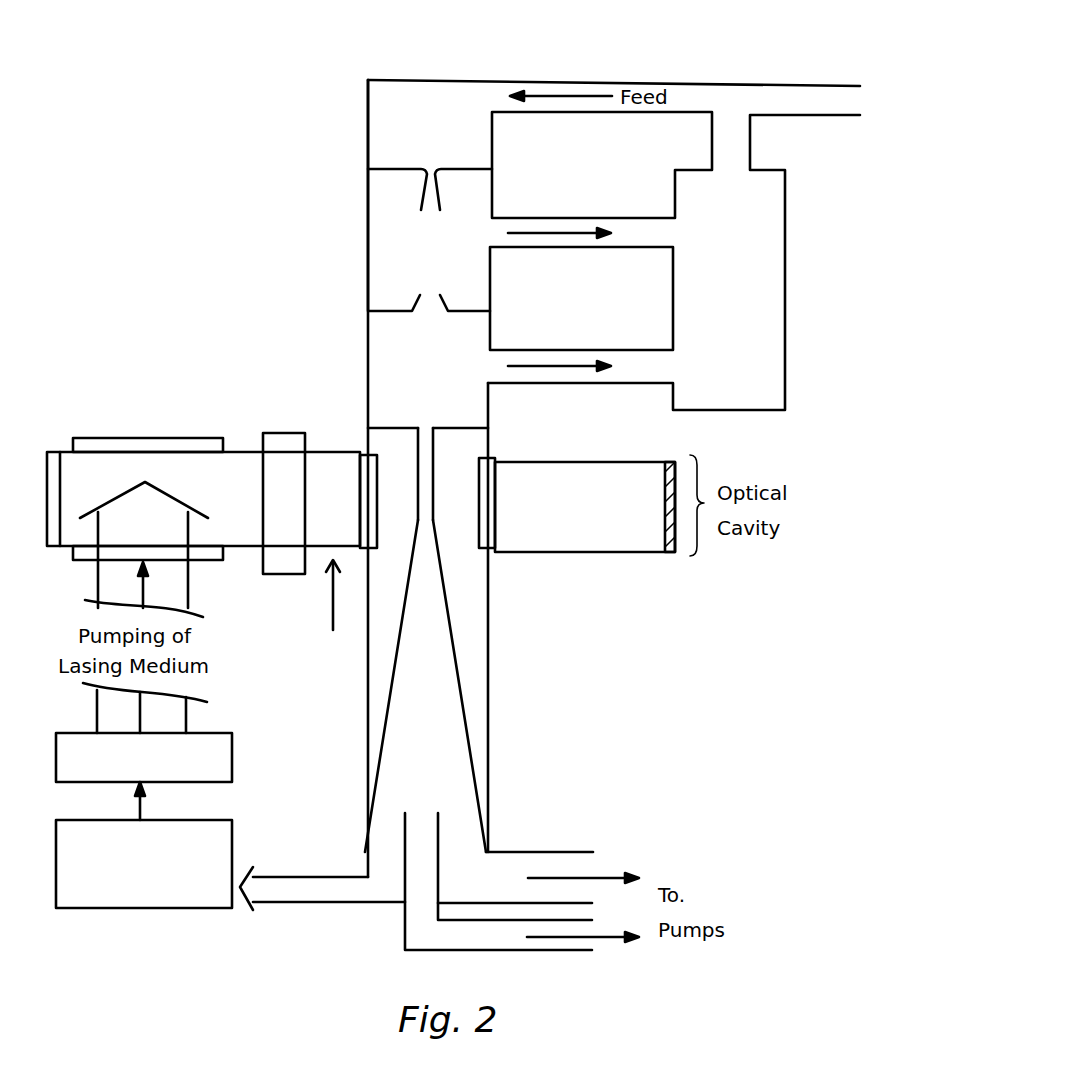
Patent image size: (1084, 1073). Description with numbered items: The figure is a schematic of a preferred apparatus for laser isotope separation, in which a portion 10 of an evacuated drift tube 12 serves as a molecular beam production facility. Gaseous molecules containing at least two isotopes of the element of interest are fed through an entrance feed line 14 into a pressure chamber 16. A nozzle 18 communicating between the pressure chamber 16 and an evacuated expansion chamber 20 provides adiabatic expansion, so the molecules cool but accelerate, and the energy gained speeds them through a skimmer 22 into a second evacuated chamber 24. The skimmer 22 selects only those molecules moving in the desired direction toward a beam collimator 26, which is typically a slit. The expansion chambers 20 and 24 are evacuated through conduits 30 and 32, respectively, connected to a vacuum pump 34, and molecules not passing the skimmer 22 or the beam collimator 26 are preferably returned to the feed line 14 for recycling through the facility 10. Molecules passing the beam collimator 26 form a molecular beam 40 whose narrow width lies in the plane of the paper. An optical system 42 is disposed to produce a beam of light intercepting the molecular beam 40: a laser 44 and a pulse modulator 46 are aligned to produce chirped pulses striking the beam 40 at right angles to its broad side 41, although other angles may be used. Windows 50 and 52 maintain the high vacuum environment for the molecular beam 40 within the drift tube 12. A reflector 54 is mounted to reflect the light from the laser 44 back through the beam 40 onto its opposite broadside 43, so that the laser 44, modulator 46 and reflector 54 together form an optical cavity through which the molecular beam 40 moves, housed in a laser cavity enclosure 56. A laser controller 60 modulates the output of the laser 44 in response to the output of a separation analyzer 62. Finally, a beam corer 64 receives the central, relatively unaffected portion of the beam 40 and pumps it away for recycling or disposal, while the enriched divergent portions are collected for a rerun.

The portion of evacuated drift tube 10 is at (347, 245).
The evacuated drift tube 12 is at (370, 130).
The entrance feed line 14 is at (497, 80).
The pressure chamber 16 is at (445, 135).
The nozzle 18 is at (420, 190).
The evacuated expansion chamber 20 is at (448, 267).
The skimmer 22 is at (412, 298).
The second evacuated chamber 24 is at (448, 375).
The beam collimator 26 is at (439, 427).
The conduit 30 is at (528, 218).
The conduit 32 is at (525, 348).
The vacuum pump 34 is at (785, 362).
The molecular beam 40 is at (434, 443).
The broad side of beam 41 is at (405, 597).
The optical system 42 is at (330, 615).
The broadside of beam 43 is at (445, 582).
The laser 44 is at (150, 438).
The pulse modulator 46 is at (280, 433).
The window 50 is at (370, 460).
The window 52 is at (490, 468).
The reflector 54 is at (676, 537).
The laser cavity enclosure 56 is at (232, 548).
The laser controller 60 is at (232, 757).
The separation analyzer 62 is at (232, 842).
The beam corer 64 is at (438, 885).